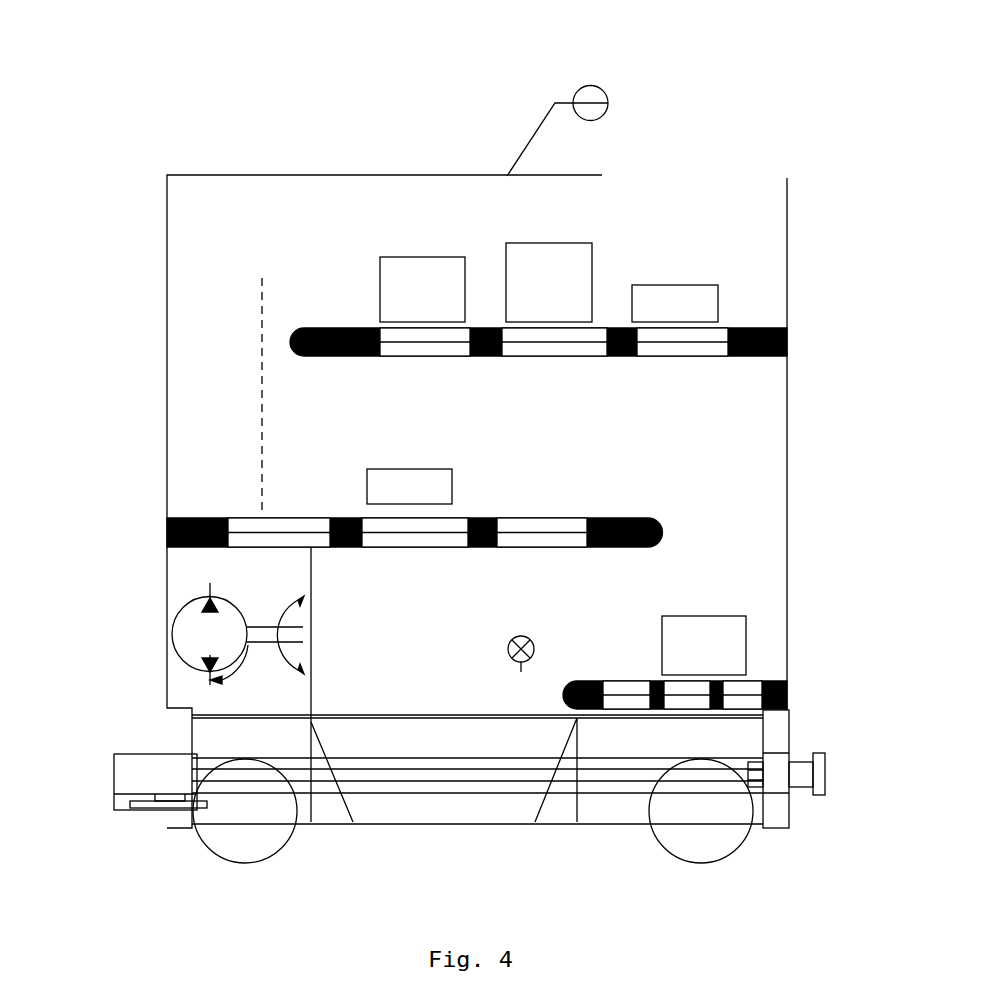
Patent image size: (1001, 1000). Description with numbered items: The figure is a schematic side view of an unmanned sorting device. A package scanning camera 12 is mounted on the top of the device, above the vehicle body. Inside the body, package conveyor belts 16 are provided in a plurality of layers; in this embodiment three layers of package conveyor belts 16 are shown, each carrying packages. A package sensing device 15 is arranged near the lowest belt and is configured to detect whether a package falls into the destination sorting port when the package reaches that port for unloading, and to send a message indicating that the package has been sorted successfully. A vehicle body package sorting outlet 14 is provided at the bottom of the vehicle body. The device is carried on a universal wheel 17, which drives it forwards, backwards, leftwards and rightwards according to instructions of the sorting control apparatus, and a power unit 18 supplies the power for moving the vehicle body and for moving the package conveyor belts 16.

The package scanning camera 12 is at (597, 86).
The vehicle body package sorting outlet 14 is at (453, 827).
The package sensing device 15 is at (527, 636).
The package conveyor belts 16 is at (308, 327).
The universal wheel 17 is at (688, 861).
The power unit 18 is at (192, 638).